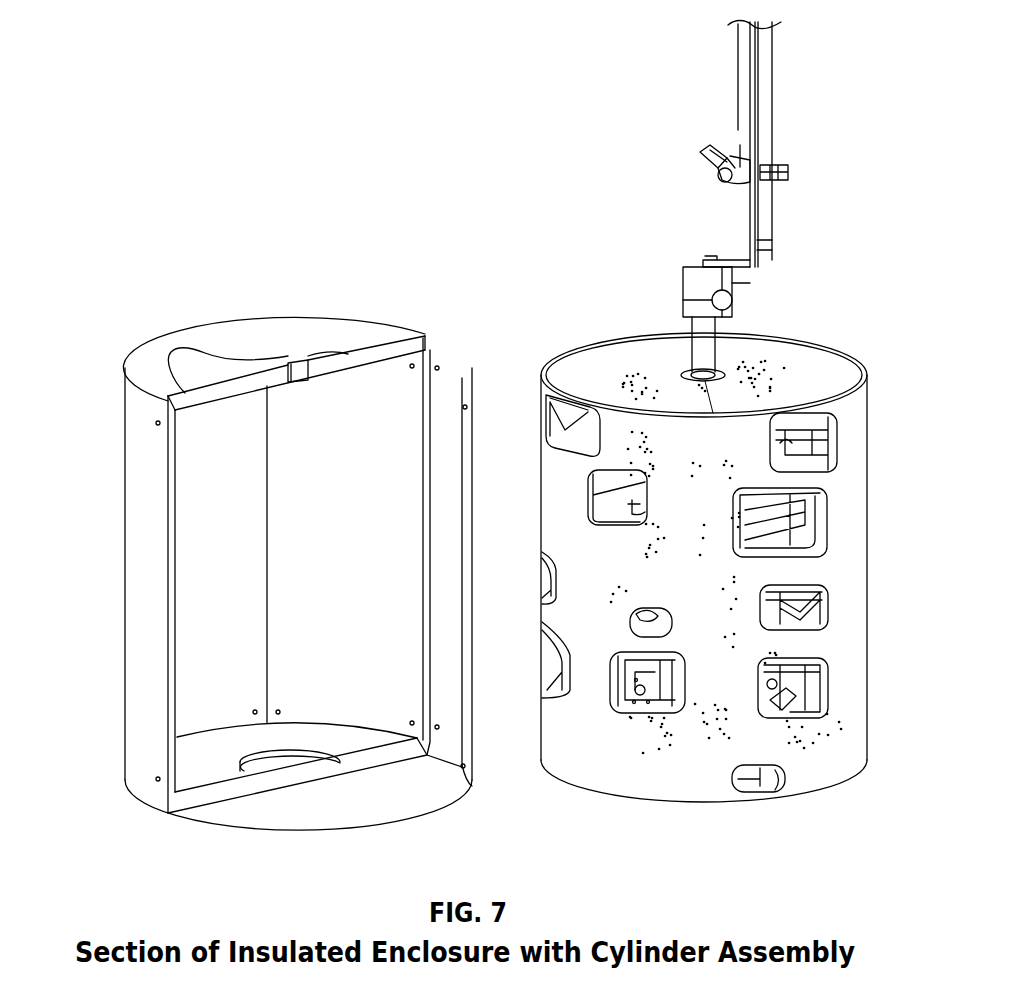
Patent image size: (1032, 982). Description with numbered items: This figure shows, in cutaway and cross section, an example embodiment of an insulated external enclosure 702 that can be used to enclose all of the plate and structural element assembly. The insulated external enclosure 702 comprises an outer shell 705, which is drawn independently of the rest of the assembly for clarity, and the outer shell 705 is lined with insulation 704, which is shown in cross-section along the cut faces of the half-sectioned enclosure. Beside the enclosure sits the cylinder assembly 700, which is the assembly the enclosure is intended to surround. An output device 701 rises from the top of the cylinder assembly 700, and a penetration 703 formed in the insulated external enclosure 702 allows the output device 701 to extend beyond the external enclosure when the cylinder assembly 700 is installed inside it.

The cylinder assembly 700 is at (610, 341).
The output device 701 is at (682, 277).
The insulated external enclosure 702 is at (190, 330).
The penetration 703 is at (297, 362).
The insulation 704 is at (140, 457).
The outer shell 705 is at (462, 366).